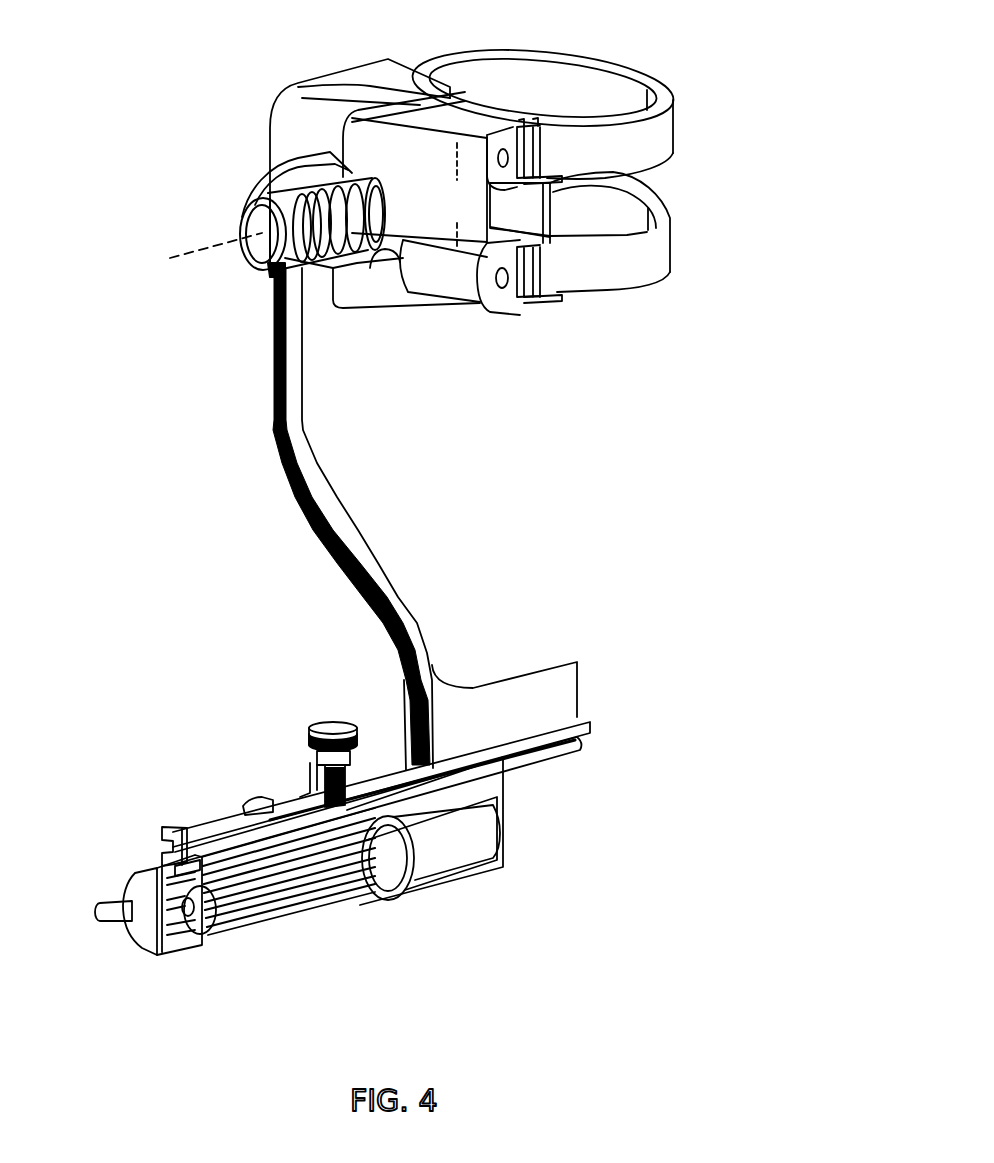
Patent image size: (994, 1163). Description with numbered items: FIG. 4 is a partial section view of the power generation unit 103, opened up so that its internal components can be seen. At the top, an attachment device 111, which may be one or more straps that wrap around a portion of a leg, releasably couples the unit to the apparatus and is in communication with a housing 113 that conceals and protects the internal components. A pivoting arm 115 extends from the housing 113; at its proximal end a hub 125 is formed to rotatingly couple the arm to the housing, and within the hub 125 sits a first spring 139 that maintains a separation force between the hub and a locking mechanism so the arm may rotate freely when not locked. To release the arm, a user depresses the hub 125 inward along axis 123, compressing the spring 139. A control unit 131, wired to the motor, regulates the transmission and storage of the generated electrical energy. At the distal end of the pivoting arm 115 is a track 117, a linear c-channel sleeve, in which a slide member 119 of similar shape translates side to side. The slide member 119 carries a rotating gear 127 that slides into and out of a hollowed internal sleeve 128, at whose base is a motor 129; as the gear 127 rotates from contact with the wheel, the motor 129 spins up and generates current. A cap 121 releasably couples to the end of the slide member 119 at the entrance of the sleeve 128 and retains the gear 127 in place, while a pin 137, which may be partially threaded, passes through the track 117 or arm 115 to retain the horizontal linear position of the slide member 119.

The power generation unit 103 is at (692, 778).
The attachment device 111 is at (661, 88).
The housing 113 is at (330, 78).
The pivoting arm 115 is at (350, 522).
The track 117 is at (263, 797).
The slide member 119 is at (192, 832).
The cap 121 is at (122, 889).
The axis 123 is at (203, 250).
The hub 125 is at (262, 178).
The rotating gear 127 is at (300, 906).
The hollowed internal sleeve 128 is at (487, 790).
The motor 129 is at (478, 853).
The control unit 131 is at (468, 215).
The pin 137 is at (335, 722).
The first spring 139 is at (355, 180).